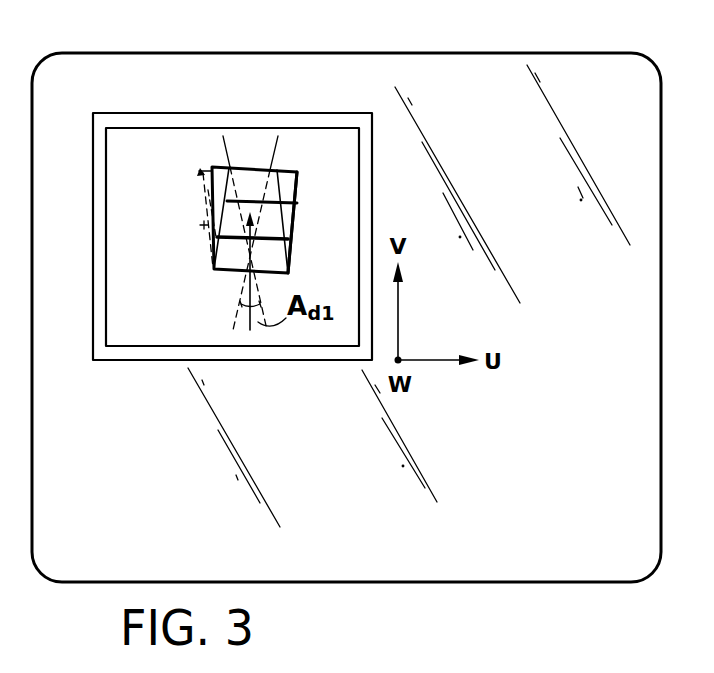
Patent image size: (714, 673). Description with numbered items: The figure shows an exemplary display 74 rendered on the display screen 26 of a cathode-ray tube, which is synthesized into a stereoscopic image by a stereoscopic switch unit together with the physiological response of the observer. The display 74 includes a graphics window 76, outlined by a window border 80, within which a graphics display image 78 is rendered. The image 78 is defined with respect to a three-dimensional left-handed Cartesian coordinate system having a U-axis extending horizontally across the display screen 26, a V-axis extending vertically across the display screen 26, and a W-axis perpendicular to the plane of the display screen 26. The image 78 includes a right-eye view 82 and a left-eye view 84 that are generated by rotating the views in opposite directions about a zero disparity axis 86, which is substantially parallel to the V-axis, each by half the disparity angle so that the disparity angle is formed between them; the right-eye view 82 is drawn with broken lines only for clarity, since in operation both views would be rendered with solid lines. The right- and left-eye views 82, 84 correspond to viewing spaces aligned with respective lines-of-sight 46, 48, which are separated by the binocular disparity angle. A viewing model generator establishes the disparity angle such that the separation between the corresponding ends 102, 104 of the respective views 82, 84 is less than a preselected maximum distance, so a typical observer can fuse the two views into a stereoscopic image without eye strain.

The display screen 26 is at (577, 75).
The display 74 is at (318, 473).
The graphics window 76 is at (127, 143).
The window border 80 is at (172, 362).
The line-of-sight 46 is at (223, 150).
The line-of-sight 48 is at (281, 162).
The graphics display image 78 is at (212, 186).
The left-eye view 84 is at (293, 221).
The end 104 is at (284, 185).
The end 102 is at (200, 169).
The right-eye view 82 is at (205, 225).
The zero disparity axis 86 is at (243, 327).